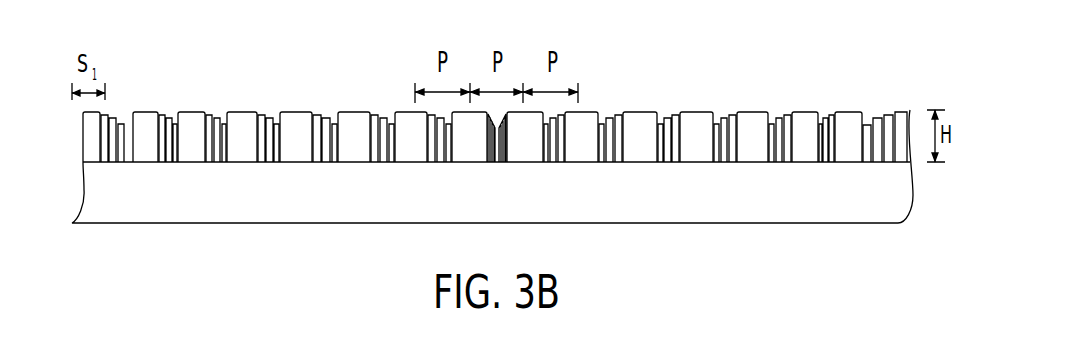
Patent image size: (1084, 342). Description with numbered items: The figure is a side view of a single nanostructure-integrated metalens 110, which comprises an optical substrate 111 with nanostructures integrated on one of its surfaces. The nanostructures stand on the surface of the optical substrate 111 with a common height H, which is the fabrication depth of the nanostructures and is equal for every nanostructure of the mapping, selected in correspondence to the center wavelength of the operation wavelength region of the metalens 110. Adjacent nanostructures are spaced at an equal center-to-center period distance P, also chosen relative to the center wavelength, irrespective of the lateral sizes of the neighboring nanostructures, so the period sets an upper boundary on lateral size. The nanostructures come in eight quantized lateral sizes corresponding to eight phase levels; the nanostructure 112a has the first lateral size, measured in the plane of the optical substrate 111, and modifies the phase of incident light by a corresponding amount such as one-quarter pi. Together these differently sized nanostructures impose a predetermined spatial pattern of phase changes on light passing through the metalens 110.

The single nanostructure-integrated metalens 110 is at (790, 82).
The optical substrate 111 is at (890, 179).
The nanostructure 112a is at (88, 137).